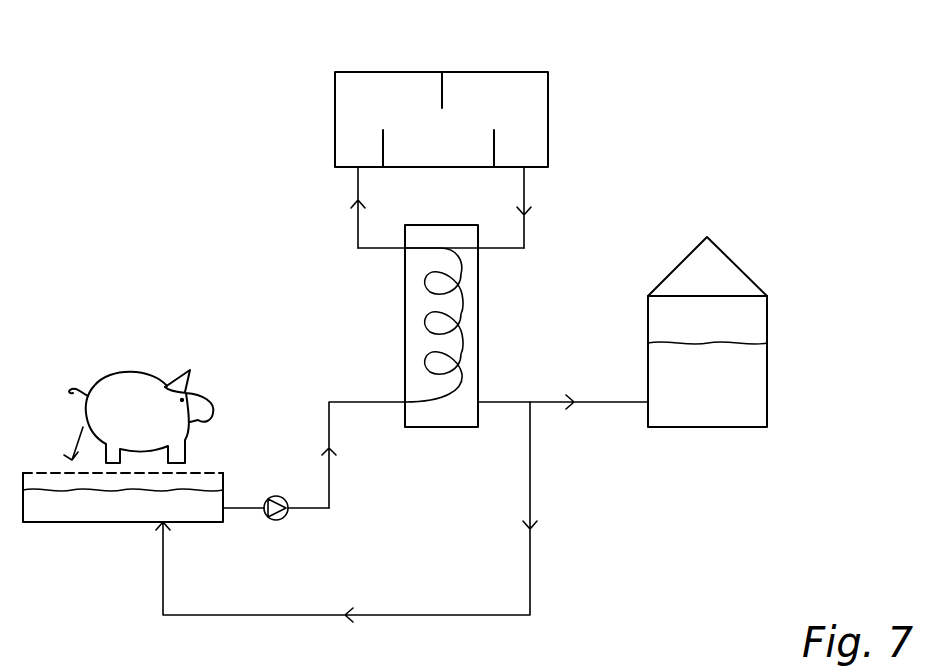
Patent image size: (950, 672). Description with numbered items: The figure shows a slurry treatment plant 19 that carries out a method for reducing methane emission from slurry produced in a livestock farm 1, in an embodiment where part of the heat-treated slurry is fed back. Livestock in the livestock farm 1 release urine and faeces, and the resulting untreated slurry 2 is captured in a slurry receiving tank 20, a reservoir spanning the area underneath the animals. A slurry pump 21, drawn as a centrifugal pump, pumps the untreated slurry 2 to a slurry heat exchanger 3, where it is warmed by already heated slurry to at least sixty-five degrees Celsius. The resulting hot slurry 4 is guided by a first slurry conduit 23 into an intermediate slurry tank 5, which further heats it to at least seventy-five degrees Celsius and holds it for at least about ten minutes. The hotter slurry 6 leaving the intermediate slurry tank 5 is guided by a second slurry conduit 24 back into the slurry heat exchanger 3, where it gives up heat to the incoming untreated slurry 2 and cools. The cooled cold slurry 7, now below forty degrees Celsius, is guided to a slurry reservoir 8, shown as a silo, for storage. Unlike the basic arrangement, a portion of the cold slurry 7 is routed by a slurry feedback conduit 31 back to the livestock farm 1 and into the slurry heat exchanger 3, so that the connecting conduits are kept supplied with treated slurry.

The livestock farm 1 is at (61, 251).
The slurry treatment plant 19 is at (224, 150).
The untreated slurry 2 is at (352, 402).
The slurry heat exchanger 3 is at (478, 325).
The hot slurry 4 is at (304, 208).
The first slurry conduit 23 is at (358, 240).
The intermediate slurry tank 5 is at (485, 72).
The hot slurry 6 is at (577, 207).
The second slurry conduit 24 is at (524, 230).
The cold slurry 7 is at (600, 405).
The slurry feedback conduit 31 is at (530, 575).
The slurry reservoir 8 is at (767, 378).
The slurry receiving tank 20 is at (120, 522).
The slurry pump 21 is at (276, 520).